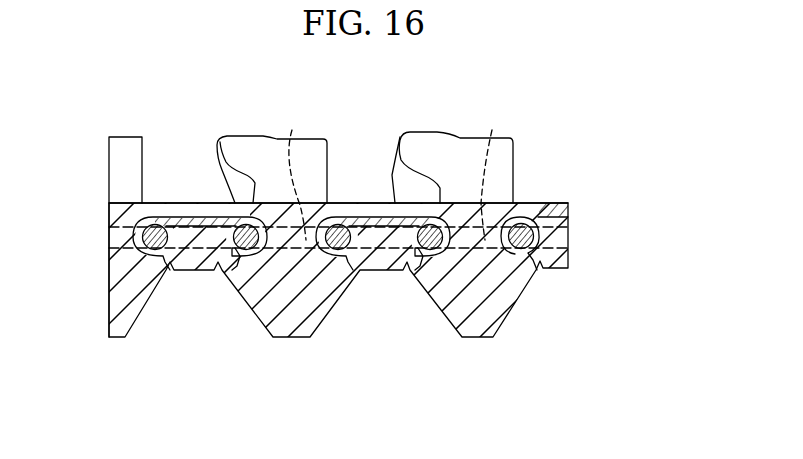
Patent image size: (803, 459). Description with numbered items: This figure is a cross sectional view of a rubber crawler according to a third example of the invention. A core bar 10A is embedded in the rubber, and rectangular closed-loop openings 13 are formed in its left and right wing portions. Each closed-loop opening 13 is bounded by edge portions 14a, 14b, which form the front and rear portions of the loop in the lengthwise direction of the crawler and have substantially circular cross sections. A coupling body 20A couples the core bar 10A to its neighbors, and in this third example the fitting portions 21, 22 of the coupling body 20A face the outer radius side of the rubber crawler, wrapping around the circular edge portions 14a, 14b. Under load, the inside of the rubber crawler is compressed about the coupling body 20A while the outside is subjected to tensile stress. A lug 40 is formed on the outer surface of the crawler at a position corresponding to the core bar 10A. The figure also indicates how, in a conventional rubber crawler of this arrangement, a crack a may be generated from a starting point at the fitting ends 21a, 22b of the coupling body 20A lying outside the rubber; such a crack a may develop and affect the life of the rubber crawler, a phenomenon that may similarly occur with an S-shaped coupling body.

The core bar 10A is at (355, 112).
The closed-loop opening 13 is at (290, 134).
The edge portion 14a is at (153, 225).
The edge portion 14b is at (206, 152).
The coupling body 20A is at (388, 226).
The fitting portion 21 is at (236, 258).
The fitting end 21a is at (222, 258).
The fitting portion 22 is at (150, 262).
The fitting end 22b is at (184, 250).
The lug 40 is at (287, 320).
The crack a is at (170, 276).